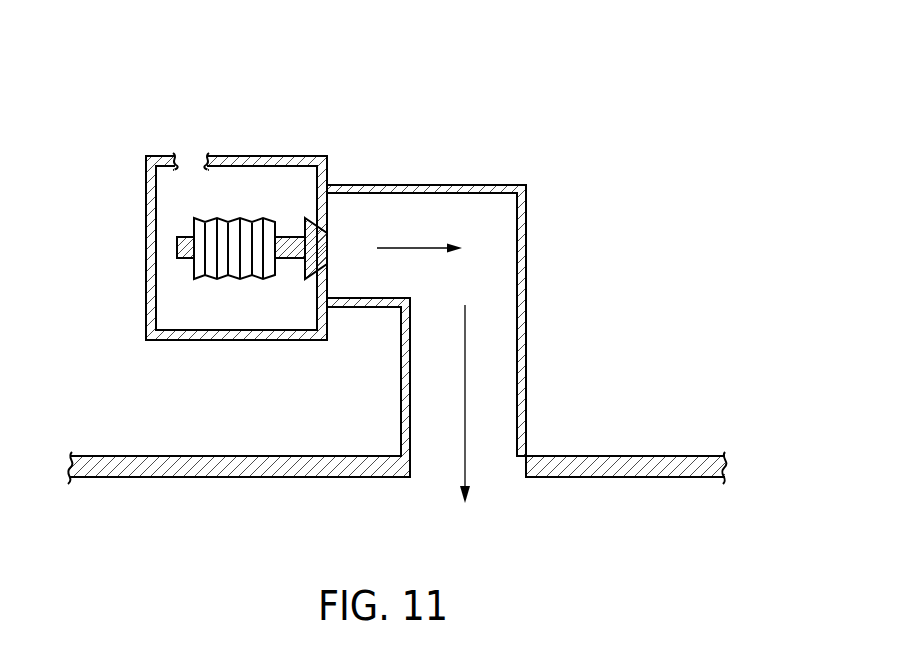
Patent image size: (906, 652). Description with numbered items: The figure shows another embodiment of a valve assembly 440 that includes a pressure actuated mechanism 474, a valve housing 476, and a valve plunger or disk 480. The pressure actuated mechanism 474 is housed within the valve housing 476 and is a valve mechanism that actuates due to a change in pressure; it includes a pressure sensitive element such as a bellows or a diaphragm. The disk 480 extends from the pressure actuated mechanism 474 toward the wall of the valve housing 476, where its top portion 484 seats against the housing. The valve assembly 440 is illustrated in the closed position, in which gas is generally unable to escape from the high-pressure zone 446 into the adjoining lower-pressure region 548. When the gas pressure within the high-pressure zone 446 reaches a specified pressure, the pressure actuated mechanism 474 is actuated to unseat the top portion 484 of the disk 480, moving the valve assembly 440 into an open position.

The valve assembly 440 is at (400, 286).
The high-pressure zone 446 is at (649, 282).
The pressure actuated mechanism 474 is at (236, 240).
The valve housing 476 is at (300, 157).
The valve plunger or disk 480 is at (288, 260).
The top portion 484 is at (328, 226).
The second passage 548 is at (597, 545).